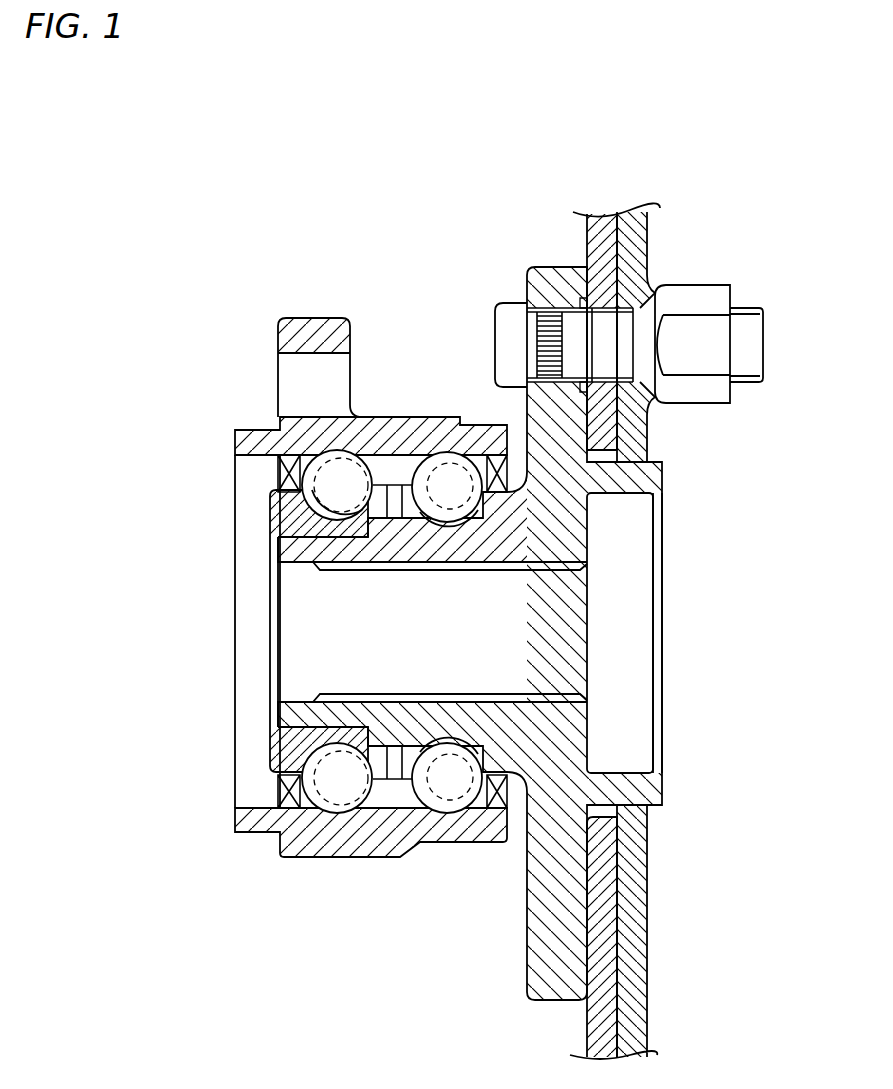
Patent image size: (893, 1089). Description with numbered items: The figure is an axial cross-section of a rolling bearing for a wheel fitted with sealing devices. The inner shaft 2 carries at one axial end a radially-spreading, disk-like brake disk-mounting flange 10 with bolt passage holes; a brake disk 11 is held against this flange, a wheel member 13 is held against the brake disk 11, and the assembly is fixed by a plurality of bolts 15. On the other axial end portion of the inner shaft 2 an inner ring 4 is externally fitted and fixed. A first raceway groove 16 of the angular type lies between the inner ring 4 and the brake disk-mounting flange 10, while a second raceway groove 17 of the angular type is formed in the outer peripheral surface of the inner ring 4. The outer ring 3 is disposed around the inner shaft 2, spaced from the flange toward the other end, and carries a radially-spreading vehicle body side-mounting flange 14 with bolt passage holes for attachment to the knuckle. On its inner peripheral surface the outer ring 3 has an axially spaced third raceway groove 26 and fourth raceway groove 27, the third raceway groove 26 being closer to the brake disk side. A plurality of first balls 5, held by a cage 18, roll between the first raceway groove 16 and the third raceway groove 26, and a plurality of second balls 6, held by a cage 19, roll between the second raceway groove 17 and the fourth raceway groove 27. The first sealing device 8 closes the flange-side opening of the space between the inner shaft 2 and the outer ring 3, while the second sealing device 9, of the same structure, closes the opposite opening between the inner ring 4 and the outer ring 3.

The inner shaft 2 is at (550, 540).
The outer ring 3 is at (392, 419).
The inner ring 4 is at (270, 505).
The first balls 5 is at (430, 785).
The second balls 6 is at (327, 790).
The first sealing device 8 is at (592, 494).
The second sealing device 9 is at (276, 464).
The brake disk-mounting flange 10 is at (542, 290).
The brake disk 11 is at (588, 240).
The wheel member 13 is at (636, 245).
The vehicle body side-mounting flange 14 is at (318, 318).
The bolts 15 is at (745, 345).
The first raceway groove 16 is at (460, 788).
The second raceway groove 17 is at (327, 483).
The cage 18 is at (458, 472).
The cage 19 is at (328, 497).
The third raceway groove 26 is at (452, 490).
The fourth raceway groove 27 is at (346, 800).